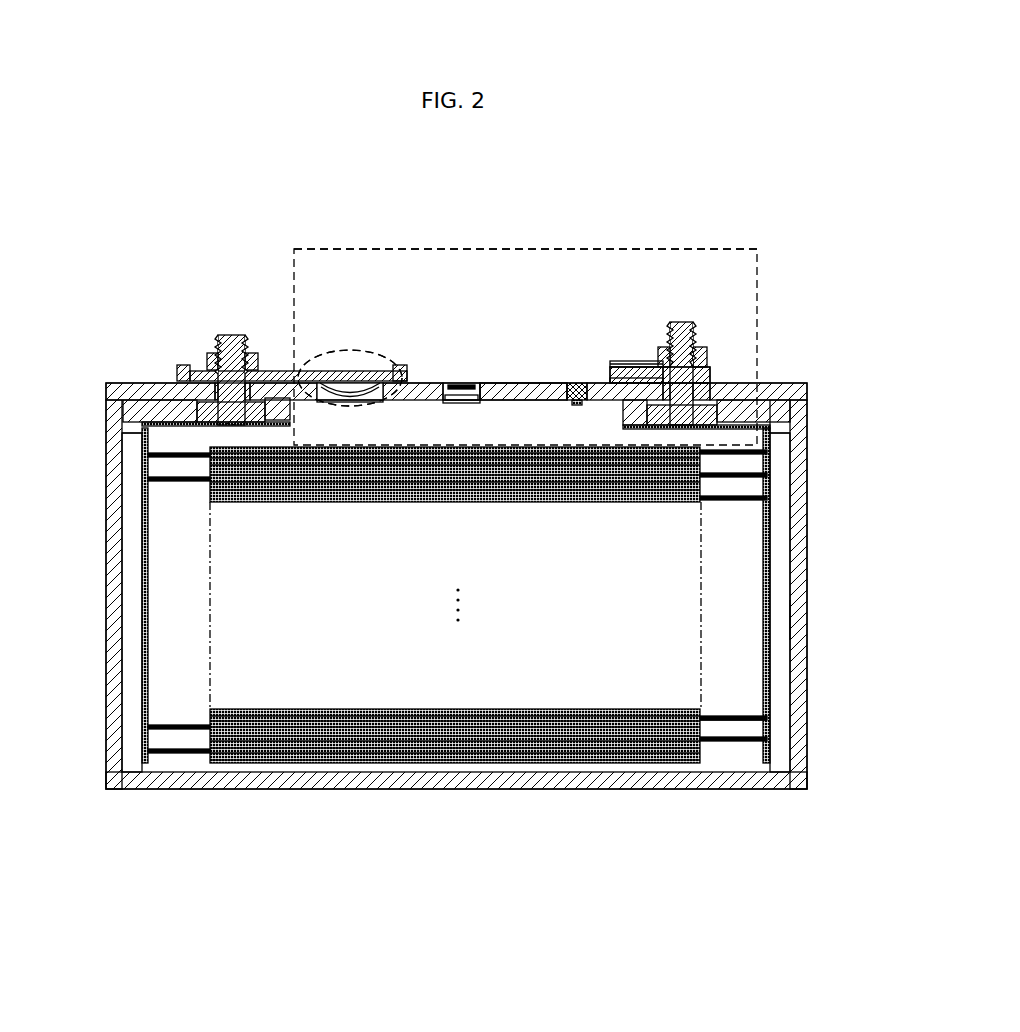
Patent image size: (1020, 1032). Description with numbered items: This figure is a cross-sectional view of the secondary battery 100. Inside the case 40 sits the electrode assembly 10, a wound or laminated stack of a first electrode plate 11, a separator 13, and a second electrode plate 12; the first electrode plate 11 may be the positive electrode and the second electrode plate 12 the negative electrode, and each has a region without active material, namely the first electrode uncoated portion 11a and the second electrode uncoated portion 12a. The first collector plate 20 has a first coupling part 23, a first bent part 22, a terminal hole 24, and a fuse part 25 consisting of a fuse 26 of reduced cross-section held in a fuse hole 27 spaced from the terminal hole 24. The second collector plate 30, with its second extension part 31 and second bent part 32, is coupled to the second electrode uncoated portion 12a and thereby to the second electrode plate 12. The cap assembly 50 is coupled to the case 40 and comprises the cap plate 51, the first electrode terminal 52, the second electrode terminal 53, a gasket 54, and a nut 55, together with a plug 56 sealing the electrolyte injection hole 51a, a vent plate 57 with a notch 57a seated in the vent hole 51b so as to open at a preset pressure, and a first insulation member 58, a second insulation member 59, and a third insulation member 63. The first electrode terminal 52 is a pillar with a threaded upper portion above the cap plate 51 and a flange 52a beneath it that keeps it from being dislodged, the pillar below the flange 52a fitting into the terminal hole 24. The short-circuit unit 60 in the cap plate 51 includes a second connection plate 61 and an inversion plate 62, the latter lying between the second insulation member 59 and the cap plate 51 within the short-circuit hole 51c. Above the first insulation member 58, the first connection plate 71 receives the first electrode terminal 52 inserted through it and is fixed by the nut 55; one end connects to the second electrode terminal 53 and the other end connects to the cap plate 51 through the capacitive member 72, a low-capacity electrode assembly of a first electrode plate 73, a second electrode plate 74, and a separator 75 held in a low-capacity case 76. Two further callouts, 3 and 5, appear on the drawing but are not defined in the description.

The secondary battery 100 is at (798, 229).
The short-circuit region 3 is at (350, 350).
The cap region 5 is at (474, 249).
The electrode assembly 10 is at (548, 770).
The first electrode plate 11 is at (621, 765).
The first electrode uncoated portion 11a is at (723, 747).
The second electrode plate 12 is at (323, 765).
The second electrode uncoated portion 12a is at (188, 756).
The separator 13 is at (472, 768).
The first collector plate 20 is at (774, 540).
The first bent part 22 is at (810, 395).
The first coupling part 23 is at (772, 612).
The terminal hole 24 is at (772, 450).
The fuse part 25 is at (762, 400).
The fuse 26 is at (778, 396).
The fuse hole 27 is at (748, 398).
The second collector plate 30 is at (138, 540).
The second extension part 31 is at (183, 385).
The second bent part 32 is at (120, 402).
The case 40 is at (796, 480).
The cap assembly 50 is at (539, 282).
The cap plate 51 is at (515, 384).
The electrolyte injection hole 51a is at (575, 406).
The vent hole 51b is at (462, 402).
The short-circuit hole 51c is at (360, 402).
The first electrode terminal 52 is at (680, 322).
The flange 52a is at (625, 418).
The second electrode terminal 53 is at (232, 334).
The gasket 54 is at (195, 369).
The nut 55 is at (256, 352).
The plug 56 is at (573, 384).
The vent plate 57 is at (478, 384).
The notch 57a is at (452, 384).
The first insulation member 58 is at (716, 394).
The second insulation member 59 is at (404, 366).
The short-circuit unit 60 is at (305, 300).
The second connection plate 61 is at (328, 370).
The inversion plate 62 is at (360, 378).
The third insulation member 63 is at (118, 410).
The first connection plate 71 is at (716, 372).
The capacitive member 72 is at (662, 292).
The first electrode plate 73 is at (635, 366).
The second electrode plate 74 is at (605, 366).
The separator 75 is at (618, 379).
The low-capacity case 76 is at (645, 366).